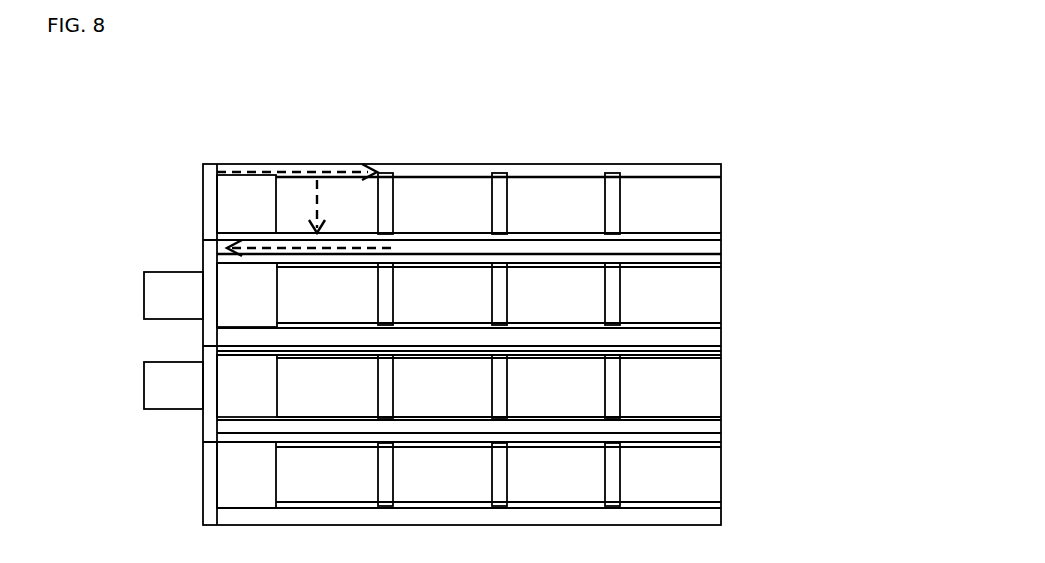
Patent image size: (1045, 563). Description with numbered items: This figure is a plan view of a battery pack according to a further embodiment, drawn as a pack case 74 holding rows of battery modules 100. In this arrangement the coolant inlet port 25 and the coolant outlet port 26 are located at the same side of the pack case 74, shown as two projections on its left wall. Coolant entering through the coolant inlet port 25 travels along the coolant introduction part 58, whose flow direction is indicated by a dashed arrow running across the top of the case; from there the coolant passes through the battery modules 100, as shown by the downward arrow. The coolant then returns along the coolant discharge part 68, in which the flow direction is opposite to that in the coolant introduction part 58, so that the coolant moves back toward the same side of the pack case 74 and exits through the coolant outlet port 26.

The coolant inlet port 25 is at (153, 295).
The coolant outlet port 26 is at (153, 385).
The coolant introduction part 58 is at (333, 170).
The coolant discharge part 68 is at (714, 245).
The pack case 74 is at (708, 158).
The battery modules 100 is at (550, 198).